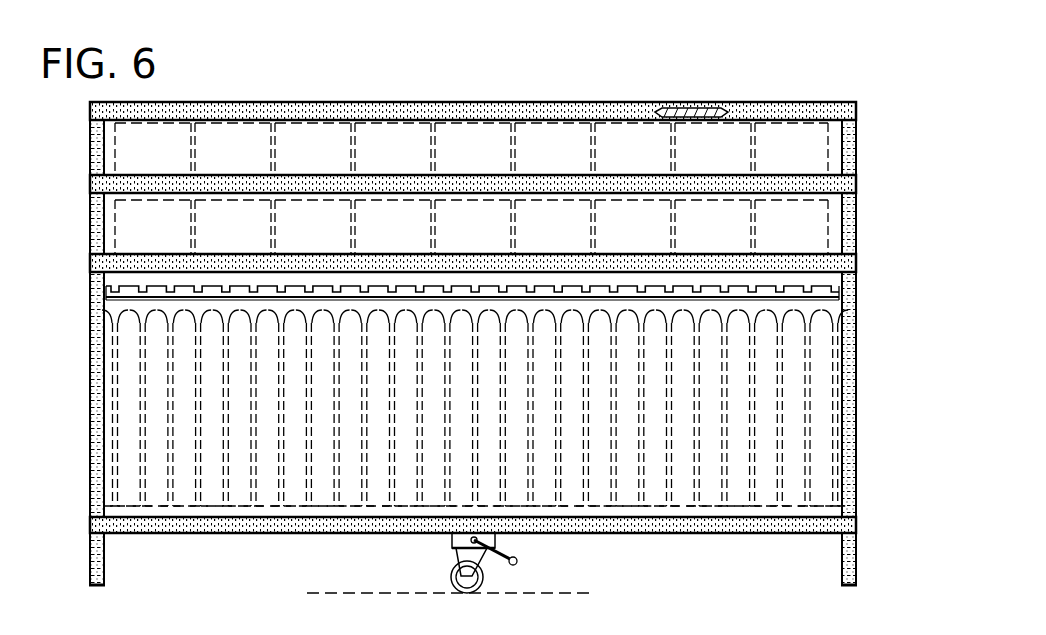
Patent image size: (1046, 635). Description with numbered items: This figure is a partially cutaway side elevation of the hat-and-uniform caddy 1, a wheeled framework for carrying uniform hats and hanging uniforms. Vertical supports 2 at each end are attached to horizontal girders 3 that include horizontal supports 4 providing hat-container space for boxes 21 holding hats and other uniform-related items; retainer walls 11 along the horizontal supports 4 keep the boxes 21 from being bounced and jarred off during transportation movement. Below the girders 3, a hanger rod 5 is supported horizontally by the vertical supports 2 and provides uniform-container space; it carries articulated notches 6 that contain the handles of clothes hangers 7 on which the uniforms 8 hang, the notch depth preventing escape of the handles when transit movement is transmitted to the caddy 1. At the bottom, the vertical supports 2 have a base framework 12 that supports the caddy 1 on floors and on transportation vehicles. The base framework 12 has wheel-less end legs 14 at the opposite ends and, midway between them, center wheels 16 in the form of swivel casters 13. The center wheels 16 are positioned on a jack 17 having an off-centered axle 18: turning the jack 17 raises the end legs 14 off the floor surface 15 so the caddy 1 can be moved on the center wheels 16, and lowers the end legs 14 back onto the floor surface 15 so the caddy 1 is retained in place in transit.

The hat-and-uniform caddy 1 is at (477, 341).
The vertical supports 2 is at (97, 280).
The horizontal girders 3 is at (297, 260).
The boxes 21 is at (432, 200).
The horizontal supports 4 is at (682, 113).
The retainer walls 11 is at (690, 110).
The hanger rod 5 is at (115, 290).
The notches 6 is at (138, 295).
The clothes hangers 7 is at (157, 305).
The uniforms 8 is at (197, 378).
The base framework 12 is at (863, 559).
The swivel casters 13 is at (466, 587).
The end legs 14 is at (100, 556).
The floor surface 15 is at (273, 587).
The center wheels 16 is at (520, 604).
The jack 17 is at (516, 560).
The off-centered axle 18 is at (456, 548).